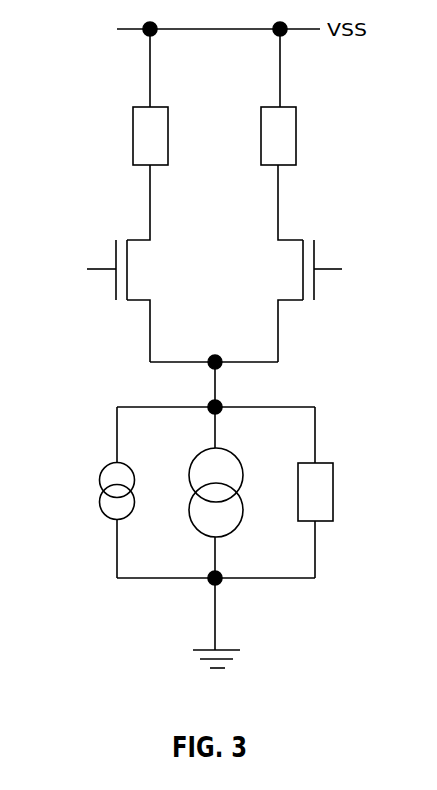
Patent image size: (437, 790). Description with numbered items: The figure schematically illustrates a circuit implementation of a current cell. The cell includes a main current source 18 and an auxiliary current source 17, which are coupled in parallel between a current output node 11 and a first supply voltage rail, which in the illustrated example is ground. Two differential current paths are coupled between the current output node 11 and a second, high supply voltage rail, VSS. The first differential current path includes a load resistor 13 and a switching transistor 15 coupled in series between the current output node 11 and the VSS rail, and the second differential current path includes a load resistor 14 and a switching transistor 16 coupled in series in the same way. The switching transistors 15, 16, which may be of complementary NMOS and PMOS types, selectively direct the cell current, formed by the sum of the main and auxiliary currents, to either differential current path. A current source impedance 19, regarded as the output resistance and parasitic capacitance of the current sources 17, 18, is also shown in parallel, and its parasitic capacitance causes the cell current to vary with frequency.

The current output node 11 is at (212, 357).
The load resistor 13 is at (133, 127).
The load resistor 14 is at (297, 122).
The switching transistor 15 is at (110, 243).
The switching transistor 16 is at (323, 242).
The auxiliary current source 17 is at (102, 472).
The main current source 18 is at (192, 467).
The current source impedance 19 is at (334, 485).